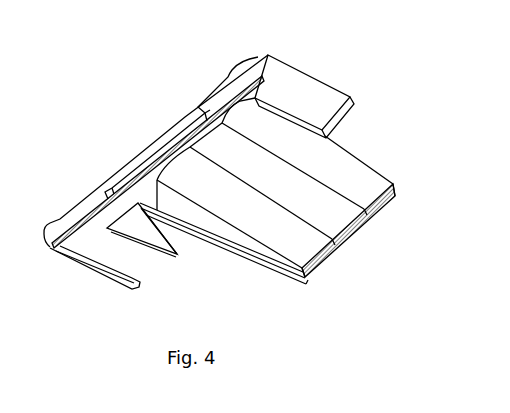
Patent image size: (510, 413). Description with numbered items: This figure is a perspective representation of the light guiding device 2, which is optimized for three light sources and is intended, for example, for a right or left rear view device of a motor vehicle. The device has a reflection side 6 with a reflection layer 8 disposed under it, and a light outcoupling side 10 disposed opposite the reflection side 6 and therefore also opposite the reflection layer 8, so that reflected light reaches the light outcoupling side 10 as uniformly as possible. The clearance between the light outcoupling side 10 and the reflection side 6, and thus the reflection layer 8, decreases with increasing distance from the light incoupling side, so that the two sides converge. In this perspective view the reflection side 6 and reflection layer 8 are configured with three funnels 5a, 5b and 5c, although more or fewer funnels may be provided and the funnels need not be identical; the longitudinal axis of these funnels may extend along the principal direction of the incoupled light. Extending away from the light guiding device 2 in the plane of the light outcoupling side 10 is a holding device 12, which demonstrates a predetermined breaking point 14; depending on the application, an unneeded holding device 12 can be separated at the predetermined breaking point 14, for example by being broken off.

The light guiding device 2 is at (333, 51).
The funnel 5a is at (309, 156).
The funnel 5b is at (260, 174).
The funnel 5c is at (252, 216).
The reflection side 6 is at (231, 220).
The reflection layer 8 is at (376, 183).
The light outcoupling side 10 is at (262, 228).
The holding device 12 is at (108, 262).
The predetermined breaking point 14 is at (360, 232).